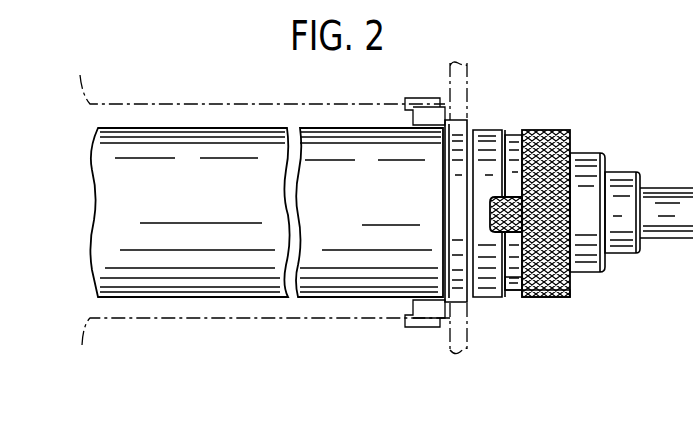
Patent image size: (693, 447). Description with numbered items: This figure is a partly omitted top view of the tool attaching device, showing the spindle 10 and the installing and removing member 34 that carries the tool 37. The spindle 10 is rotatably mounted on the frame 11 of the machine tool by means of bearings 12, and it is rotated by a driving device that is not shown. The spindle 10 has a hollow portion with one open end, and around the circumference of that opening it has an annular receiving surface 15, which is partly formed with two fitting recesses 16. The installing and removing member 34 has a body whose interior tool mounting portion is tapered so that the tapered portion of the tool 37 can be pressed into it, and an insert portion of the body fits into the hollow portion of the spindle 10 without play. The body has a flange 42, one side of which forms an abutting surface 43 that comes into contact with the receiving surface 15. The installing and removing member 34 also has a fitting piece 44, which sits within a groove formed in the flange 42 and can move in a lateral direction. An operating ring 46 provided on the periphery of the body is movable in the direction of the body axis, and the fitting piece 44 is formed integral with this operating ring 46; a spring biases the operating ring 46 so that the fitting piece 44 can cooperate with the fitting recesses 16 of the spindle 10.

The spindle 10 is at (172, 128).
The frame 11 is at (463, 93).
The bearings 12 is at (424, 110).
The annular receiving surface 15 is at (507, 287).
The fitting recesses 16 is at (493, 232).
The installing and removing member 34 is at (598, 137).
The tool 37 is at (667, 188).
The flange 42 is at (512, 138).
The abutting surface 43 is at (500, 138).
The fitting piece 44 is at (540, 297).
The operating ring 46 is at (560, 130).